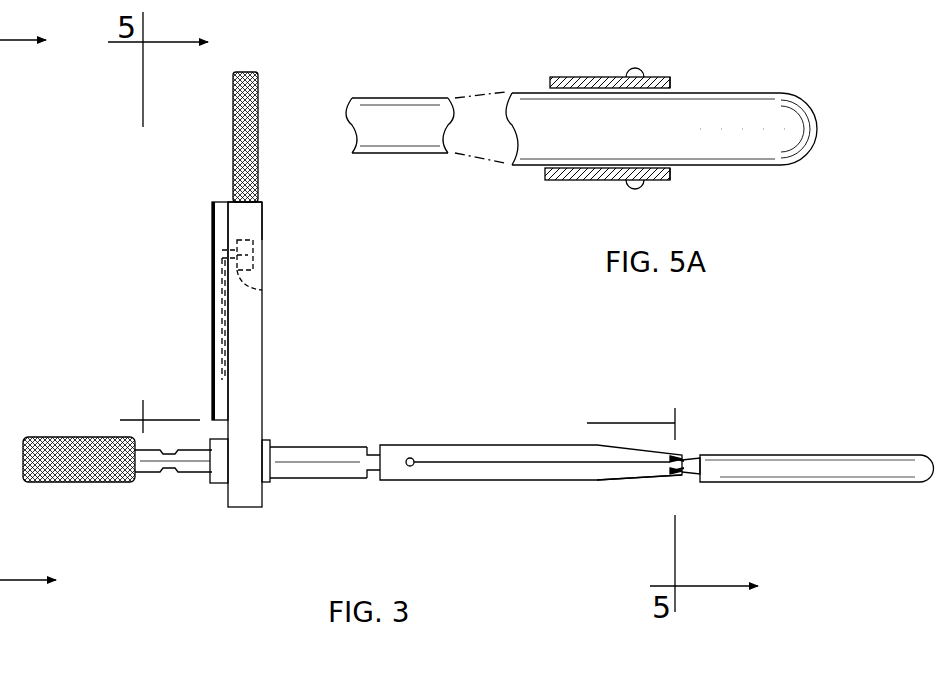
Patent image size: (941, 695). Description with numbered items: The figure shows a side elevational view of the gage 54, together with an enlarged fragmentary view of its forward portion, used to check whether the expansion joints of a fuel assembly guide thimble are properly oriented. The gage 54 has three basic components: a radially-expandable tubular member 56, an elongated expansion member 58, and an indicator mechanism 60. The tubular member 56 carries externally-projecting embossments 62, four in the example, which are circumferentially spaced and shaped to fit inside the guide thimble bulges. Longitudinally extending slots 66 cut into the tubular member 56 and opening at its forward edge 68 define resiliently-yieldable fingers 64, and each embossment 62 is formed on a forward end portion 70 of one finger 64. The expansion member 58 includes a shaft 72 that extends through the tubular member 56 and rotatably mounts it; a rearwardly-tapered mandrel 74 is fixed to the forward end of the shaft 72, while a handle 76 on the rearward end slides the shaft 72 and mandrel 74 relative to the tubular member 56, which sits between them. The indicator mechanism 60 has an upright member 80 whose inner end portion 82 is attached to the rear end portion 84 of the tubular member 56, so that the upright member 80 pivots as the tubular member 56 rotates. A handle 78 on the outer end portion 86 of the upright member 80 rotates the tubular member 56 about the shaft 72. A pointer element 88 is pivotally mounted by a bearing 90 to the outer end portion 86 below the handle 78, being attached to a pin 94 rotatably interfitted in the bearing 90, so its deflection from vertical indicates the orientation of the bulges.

In FIG. 3, the gage 54 is at (539, 392).
In FIG. 3, the radially-expandable tubular member 56 is at (433, 443).
In FIG. 5A, the radially-expandable tubular member 56 is at (563, 76).
In FIG. 3, the elongated expansion member 58 is at (732, 484).
In FIG. 5A, the elongated expansion member 58 is at (731, 92).
In FIG. 3, the indicator mechanism 60 is at (264, 330).
In FIG. 3, the embossments 62 is at (681, 459).
In FIG. 5A, the embossments 62 is at (640, 71).
In FIG. 3, the resiliently-yieldable fingers 64 is at (608, 481).
In FIG. 5A, the resiliently-yieldable fingers 64 is at (580, 181).
In FIG. 3, the slots 66 is at (476, 466).
In FIG. 3, the forward edge 68 is at (692, 461).
In FIG. 5A, the forward edge 68 is at (672, 173).
In FIG. 3, the forward end portion 70 is at (673, 457).
In FIG. 5A, the forward end portion 70 is at (661, 181).
In FIG. 3, the shaft 72 is at (195, 473).
In FIG. 5A, the shaft 72 is at (412, 155).
In FIG. 3, the rearwardly-tapered mandrel 74 is at (866, 473).
In FIG. 5A, the rearwardly-tapered mandrel 74 is at (772, 132).
In FIG. 3, the handle 76 is at (88, 485).
In FIG. 3, the handle 78 is at (232, 142).
In FIG. 3, the upright member 80 is at (263, 222).
In FIG. 3, the inner end portion 82 is at (246, 480).
In FIG. 3, the rear end portion 84 is at (274, 470).
In FIG. 3, the outer end portion 86 is at (256, 212).
In FIG. 3, the pointer element 88 is at (222, 337).
In FIG. 3, the bearing 90 is at (264, 288).
In FIG. 3, the pin 94 is at (254, 253).